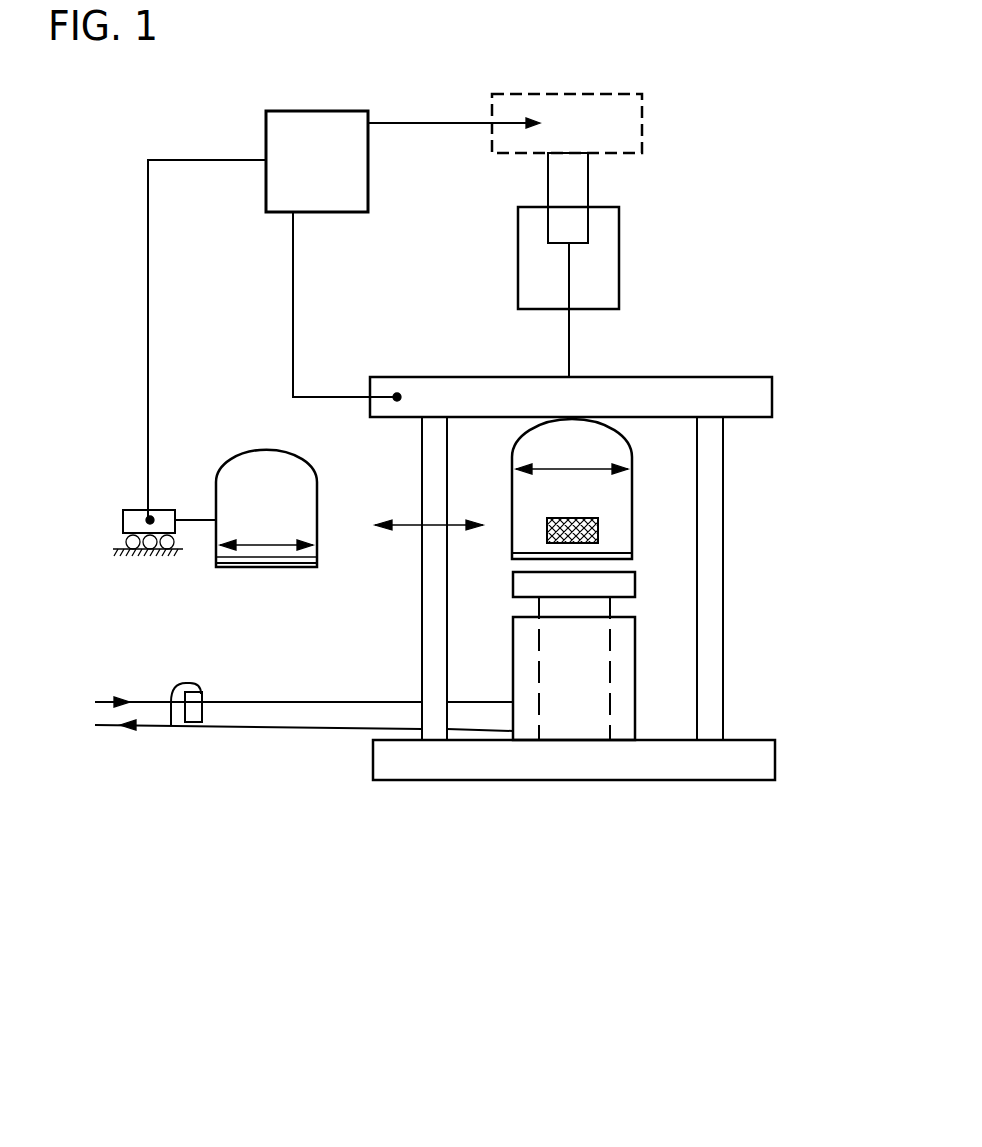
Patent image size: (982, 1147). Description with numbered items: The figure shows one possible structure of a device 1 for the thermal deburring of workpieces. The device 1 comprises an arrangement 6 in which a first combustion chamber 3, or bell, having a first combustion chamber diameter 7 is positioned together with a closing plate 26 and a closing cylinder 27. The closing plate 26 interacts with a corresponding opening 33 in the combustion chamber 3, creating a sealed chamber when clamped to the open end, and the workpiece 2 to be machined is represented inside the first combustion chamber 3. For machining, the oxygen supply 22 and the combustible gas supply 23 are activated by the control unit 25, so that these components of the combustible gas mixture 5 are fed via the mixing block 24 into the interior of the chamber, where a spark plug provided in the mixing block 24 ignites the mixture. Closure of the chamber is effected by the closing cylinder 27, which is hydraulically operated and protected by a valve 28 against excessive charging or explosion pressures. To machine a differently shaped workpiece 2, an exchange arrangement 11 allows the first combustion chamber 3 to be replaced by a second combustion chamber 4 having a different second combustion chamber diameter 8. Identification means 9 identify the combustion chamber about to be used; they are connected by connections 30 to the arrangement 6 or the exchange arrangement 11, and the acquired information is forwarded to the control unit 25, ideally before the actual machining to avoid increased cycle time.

The device for thermal deburring 1 is at (557, 848).
The workpiece 2 is at (580, 540).
The first combustion chamber 3 is at (632, 497).
The second combustion chamber 4 is at (298, 553).
The combustible gas mixture 5 is at (571, 345).
The arrangement 6 is at (760, 763).
The first combustion chamber diameter 7 is at (587, 467).
The second combustion chamber diameter 8 is at (262, 548).
The identification means 9 is at (287, 123).
The exchange arrangement 11 is at (137, 558).
The oxygen supply 22 is at (548, 182).
The combustible gas supply 23 is at (588, 182).
The mixing block 24 is at (619, 265).
The control unit 25 is at (645, 123).
The closing plate 26 is at (623, 587).
The closing cylinder 27 is at (597, 682).
The valve 28 is at (205, 725).
The connections 30 is at (148, 293).
The opening 33 is at (225, 567).